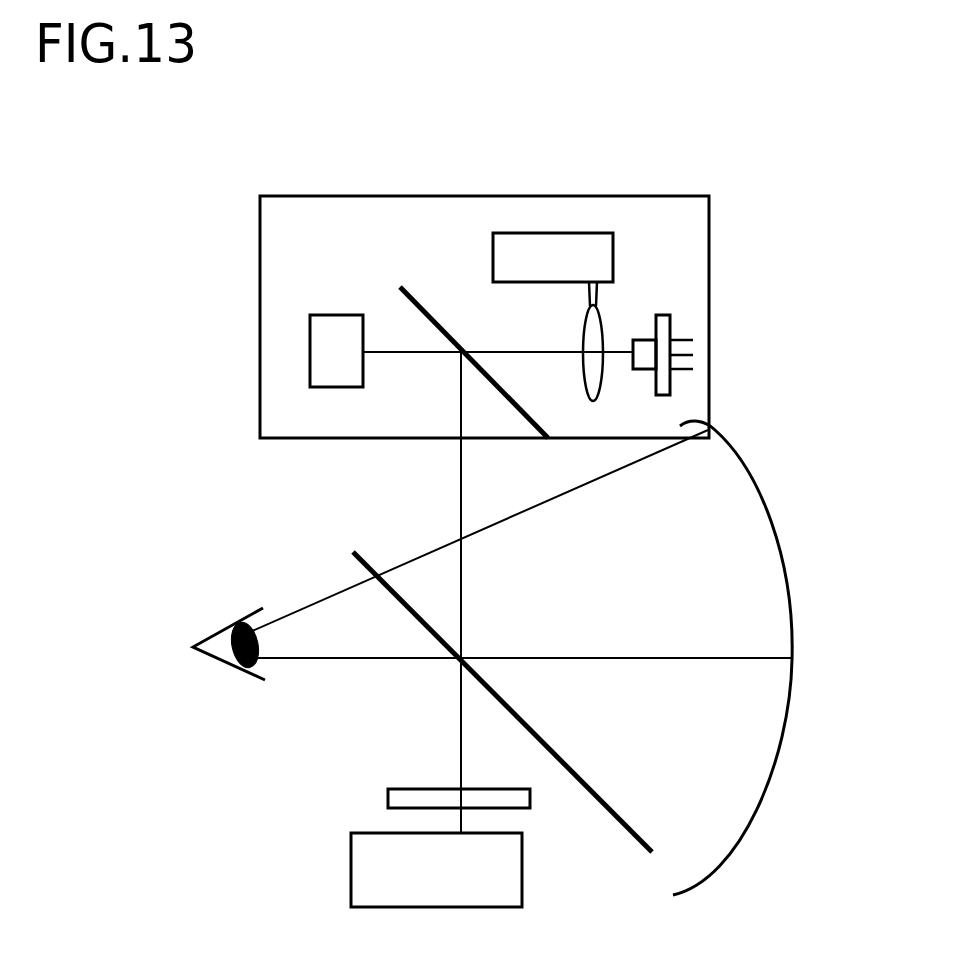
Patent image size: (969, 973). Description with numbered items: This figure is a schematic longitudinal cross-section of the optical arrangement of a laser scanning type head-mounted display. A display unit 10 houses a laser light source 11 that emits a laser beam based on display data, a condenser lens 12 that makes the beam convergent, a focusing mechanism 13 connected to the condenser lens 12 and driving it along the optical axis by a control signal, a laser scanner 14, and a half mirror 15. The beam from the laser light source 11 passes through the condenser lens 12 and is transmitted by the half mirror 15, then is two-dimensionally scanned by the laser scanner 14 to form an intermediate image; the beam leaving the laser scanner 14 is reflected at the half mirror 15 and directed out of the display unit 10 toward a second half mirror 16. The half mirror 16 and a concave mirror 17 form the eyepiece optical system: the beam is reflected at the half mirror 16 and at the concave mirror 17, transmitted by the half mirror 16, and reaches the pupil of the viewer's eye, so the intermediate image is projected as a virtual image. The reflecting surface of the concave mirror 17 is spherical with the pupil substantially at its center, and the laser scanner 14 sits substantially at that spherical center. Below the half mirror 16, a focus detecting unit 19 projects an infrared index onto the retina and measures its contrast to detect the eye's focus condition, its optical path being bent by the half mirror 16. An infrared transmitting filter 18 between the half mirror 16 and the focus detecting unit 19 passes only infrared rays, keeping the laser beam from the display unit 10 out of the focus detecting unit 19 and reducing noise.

The display unit 10 is at (260, 218).
The laser light source 11 is at (670, 326).
The condenser lens 12 is at (600, 318).
The focusing mechanism 13 is at (520, 243).
The laser scanner 14 is at (330, 340).
The half mirror 15 is at (522, 412).
The half mirror 16 is at (652, 852).
The concave mirror 17 is at (753, 470).
The infrared transmitting filter 18 is at (398, 796).
The focus detecting unit 19 is at (375, 878).